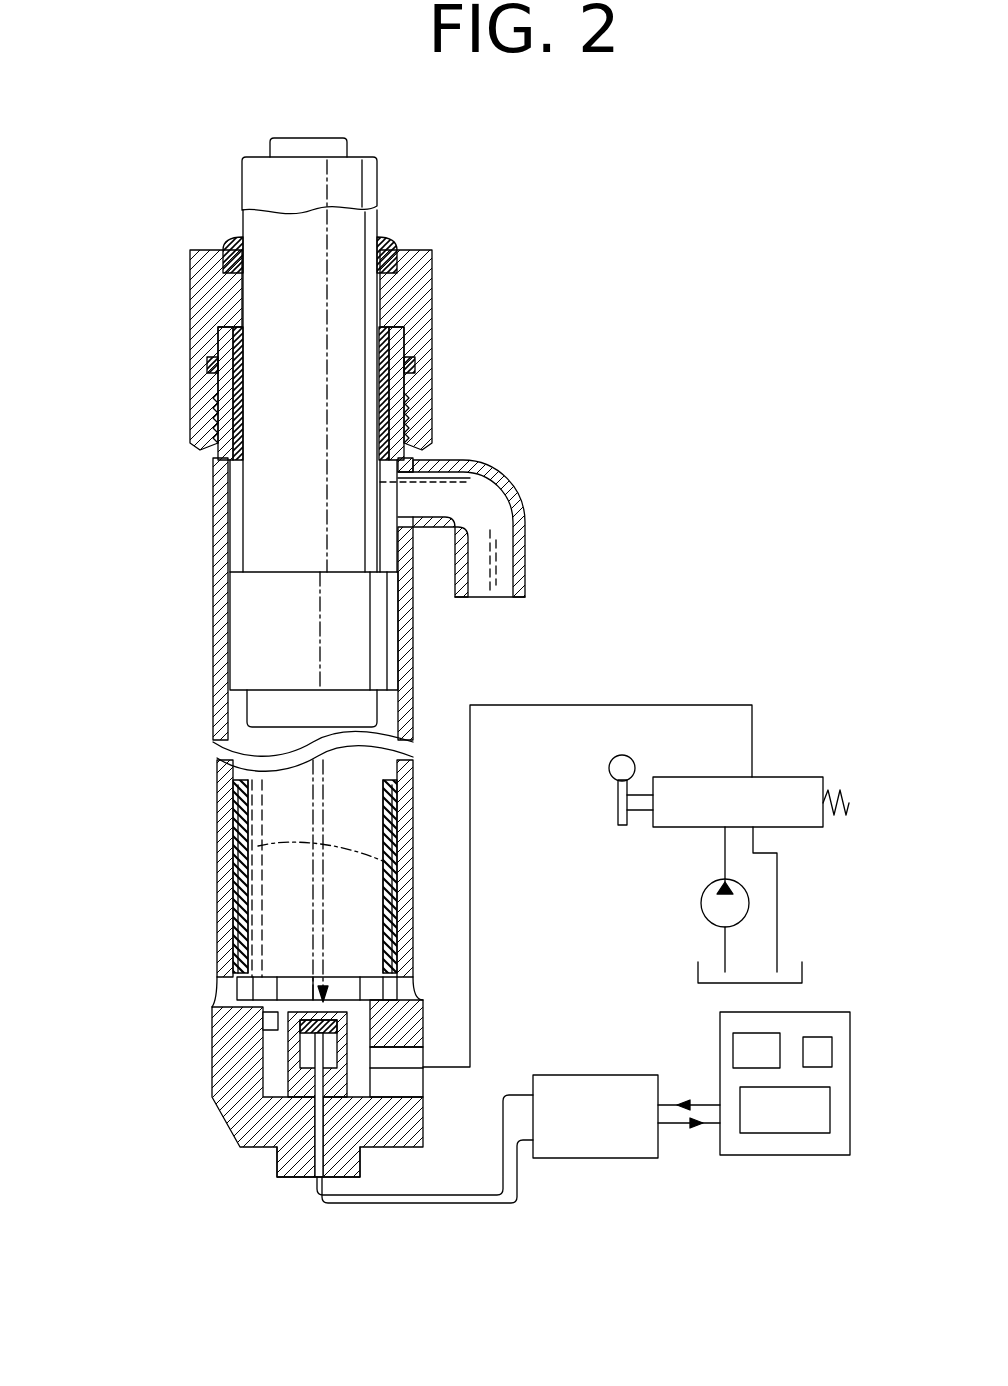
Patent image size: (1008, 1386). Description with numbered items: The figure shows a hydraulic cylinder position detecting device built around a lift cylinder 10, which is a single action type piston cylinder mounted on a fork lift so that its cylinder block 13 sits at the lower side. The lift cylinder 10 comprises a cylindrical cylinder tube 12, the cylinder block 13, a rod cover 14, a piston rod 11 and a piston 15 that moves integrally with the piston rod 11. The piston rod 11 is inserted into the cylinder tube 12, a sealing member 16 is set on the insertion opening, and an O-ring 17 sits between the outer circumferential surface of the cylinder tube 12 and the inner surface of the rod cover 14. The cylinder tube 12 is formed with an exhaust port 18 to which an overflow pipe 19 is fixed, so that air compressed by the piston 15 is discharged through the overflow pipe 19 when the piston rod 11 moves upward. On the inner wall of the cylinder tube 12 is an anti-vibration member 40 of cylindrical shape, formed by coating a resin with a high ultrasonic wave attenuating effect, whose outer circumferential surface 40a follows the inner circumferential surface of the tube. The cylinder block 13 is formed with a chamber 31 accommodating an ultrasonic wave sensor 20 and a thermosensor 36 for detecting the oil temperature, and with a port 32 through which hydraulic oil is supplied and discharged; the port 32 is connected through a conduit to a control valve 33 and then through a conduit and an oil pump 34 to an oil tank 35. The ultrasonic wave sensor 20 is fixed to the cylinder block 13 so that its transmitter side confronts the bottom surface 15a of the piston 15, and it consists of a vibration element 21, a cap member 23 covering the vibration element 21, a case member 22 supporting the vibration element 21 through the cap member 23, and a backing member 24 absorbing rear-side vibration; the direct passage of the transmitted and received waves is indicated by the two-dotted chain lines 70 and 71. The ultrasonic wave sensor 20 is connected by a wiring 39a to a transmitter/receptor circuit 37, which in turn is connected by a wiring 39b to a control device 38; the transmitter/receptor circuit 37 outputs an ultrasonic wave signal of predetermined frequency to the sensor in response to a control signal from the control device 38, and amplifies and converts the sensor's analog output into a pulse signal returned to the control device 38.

The lift cylinder 10 is at (177, 445).
The piston rod 11 is at (355, 190).
The cylinder tube 12 is at (223, 608).
The cylinder block 13 is at (232, 1038).
The rod cover 14 is at (410, 285).
The piston 15 is at (265, 640).
The bottom surface of the piston 15a is at (260, 740).
The sealing member 16 is at (395, 242).
The seal ring 17 is at (413, 360).
The exhaust port 18 is at (407, 497).
The overflow pipe 19 is at (523, 507).
The ultrasonic wave sensor 20 is at (302, 1003).
The vibration element 21 is at (292, 1058).
The case member 22 is at (275, 1157).
The cap member 23 is at (300, 1095).
The backing member 24 is at (300, 1040).
The chamber 31 is at (362, 1013).
The port 32 is at (392, 1090).
The control valve 33 is at (777, 777).
The oil pump 34 is at (708, 900).
The oil tank 35 is at (802, 970).
The thermosensor 36 is at (267, 1022).
The transmitter/receptor circuit 37 is at (597, 1150).
The control device 38 is at (775, 1145).
The wiring 39a is at (422, 1200).
The wiring 39b is at (673, 1127).
The anti-vibration member 40 is at (238, 810).
The outer circumferential surface 40a is at (228, 900).
The two-dotted chain line 70 is at (258, 850).
The two-dotted chain line 71 is at (385, 862).